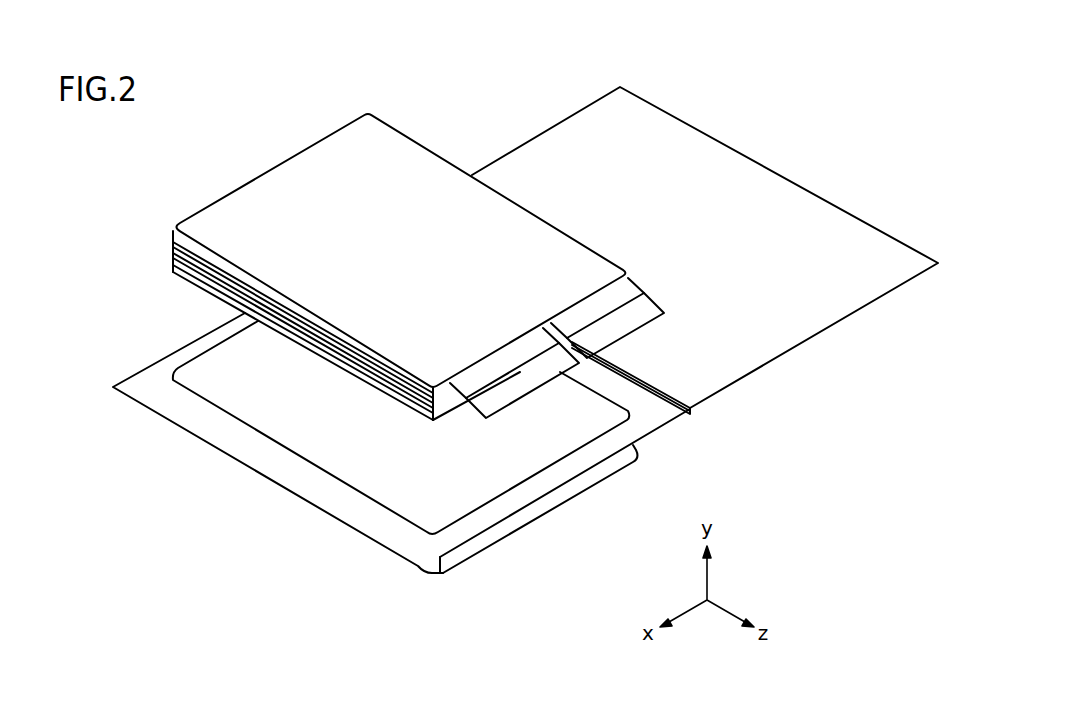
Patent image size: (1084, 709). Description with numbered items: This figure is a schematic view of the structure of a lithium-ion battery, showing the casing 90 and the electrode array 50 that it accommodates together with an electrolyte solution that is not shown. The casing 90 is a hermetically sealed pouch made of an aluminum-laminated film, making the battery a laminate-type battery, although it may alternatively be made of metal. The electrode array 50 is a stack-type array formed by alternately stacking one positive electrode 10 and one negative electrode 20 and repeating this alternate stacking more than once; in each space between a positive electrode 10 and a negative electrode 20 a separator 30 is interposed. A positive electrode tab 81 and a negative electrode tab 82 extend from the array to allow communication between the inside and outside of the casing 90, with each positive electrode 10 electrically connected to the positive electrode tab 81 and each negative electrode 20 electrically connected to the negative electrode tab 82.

The positive electrode 10 is at (315, 336).
The negative electrode 20 is at (173, 244).
The separator 30 is at (173, 253).
The electrode array 50 is at (348, 267).
The positive electrode tab 81 is at (640, 320).
The negative electrode tab 82 is at (540, 393).
The casing 90 is at (786, 181).